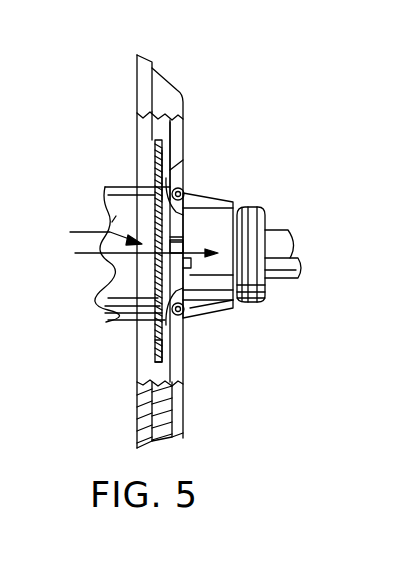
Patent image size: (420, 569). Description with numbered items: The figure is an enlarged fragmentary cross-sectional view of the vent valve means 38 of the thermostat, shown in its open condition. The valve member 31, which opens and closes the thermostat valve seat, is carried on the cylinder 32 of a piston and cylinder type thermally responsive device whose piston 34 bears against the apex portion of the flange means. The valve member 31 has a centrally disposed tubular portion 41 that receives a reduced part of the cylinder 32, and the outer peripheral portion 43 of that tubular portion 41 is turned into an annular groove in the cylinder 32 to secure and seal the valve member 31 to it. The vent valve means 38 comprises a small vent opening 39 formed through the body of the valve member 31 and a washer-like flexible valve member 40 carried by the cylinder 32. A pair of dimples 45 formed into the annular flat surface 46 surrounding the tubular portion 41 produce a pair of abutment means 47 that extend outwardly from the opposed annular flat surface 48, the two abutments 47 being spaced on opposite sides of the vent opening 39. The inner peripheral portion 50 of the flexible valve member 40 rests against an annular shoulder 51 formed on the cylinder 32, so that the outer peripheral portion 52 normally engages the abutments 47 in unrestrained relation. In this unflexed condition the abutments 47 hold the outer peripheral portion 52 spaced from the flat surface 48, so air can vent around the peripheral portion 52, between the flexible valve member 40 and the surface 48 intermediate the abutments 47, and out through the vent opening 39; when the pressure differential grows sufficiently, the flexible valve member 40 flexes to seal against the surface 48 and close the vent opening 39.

The valve member 31 is at (185, 130).
The cylinder 32 is at (120, 284).
The piston 34 is at (288, 230).
The vent valve means 38 is at (86, 233).
The vent opening 39 is at (191, 264).
The flexible valve member 40 is at (156, 152).
The tubular portion 41 is at (215, 198).
The outer peripheral portion 43 is at (222, 313).
The dimples 45 is at (186, 195).
The annular flat surface 46 is at (184, 146).
The abutment means 47 is at (112, 223).
The annular flat surface 48 is at (156, 130).
The inner peripheral portion 50 is at (156, 173).
The annular shoulder 51 is at (172, 182).
The outer peripheral portion 52 is at (157, 360).